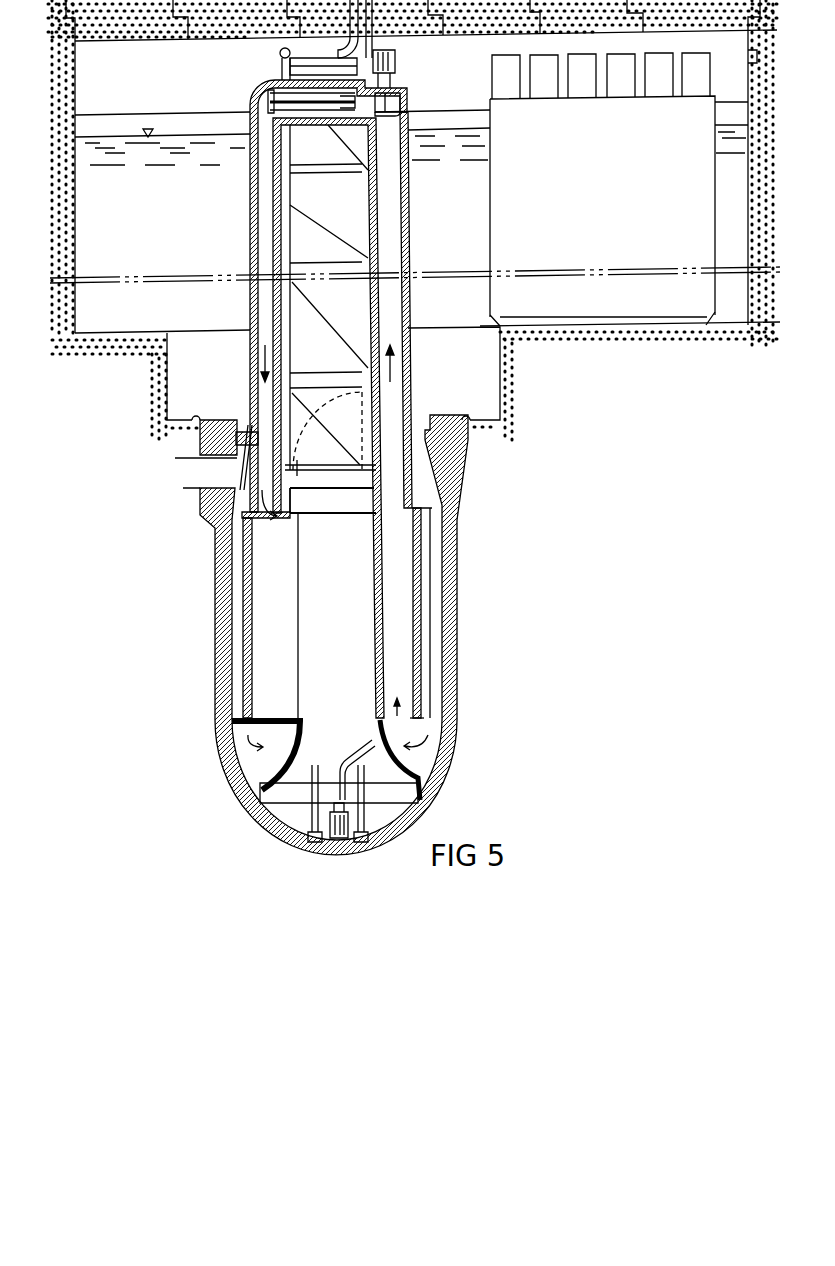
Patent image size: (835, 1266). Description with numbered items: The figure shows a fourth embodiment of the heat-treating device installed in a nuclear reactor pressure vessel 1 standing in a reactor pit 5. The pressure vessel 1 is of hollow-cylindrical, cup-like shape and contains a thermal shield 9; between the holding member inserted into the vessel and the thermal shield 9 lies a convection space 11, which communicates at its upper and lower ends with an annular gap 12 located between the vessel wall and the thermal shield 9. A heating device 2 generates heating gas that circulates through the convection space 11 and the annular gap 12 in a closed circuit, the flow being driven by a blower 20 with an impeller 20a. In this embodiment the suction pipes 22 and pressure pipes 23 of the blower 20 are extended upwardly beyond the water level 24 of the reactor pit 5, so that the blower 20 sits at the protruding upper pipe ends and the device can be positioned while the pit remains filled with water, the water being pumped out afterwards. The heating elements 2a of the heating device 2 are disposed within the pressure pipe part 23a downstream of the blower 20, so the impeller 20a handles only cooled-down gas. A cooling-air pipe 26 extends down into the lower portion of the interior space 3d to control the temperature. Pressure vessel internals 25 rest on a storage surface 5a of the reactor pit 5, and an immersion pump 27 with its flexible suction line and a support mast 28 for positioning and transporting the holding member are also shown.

The pressure vessel 1 is at (456, 556).
The heating device 2 is at (262, 103).
The heating elements 2a is at (270, 95).
The interior space 3d is at (330, 529).
The reactor pit 5 is at (443, 313).
The storage surface 5a is at (614, 317).
The thermal shield 9 is at (431, 651).
The convection space 11 is at (407, 618).
The annular gap 12 is at (436, 612).
The blower 20 is at (397, 62).
The impeller 20a is at (408, 108).
The suction pipes 22 is at (406, 213).
The pressure pipes 23 is at (252, 205).
The pressure pipe part 23a is at (300, 125).
The water level 24 is at (122, 134).
The pressure vessel internals 25 is at (621, 228).
The cooling-air pipe 26 is at (300, 657).
The immersion pump 27 is at (333, 843).
The support mast 28 is at (345, 227).